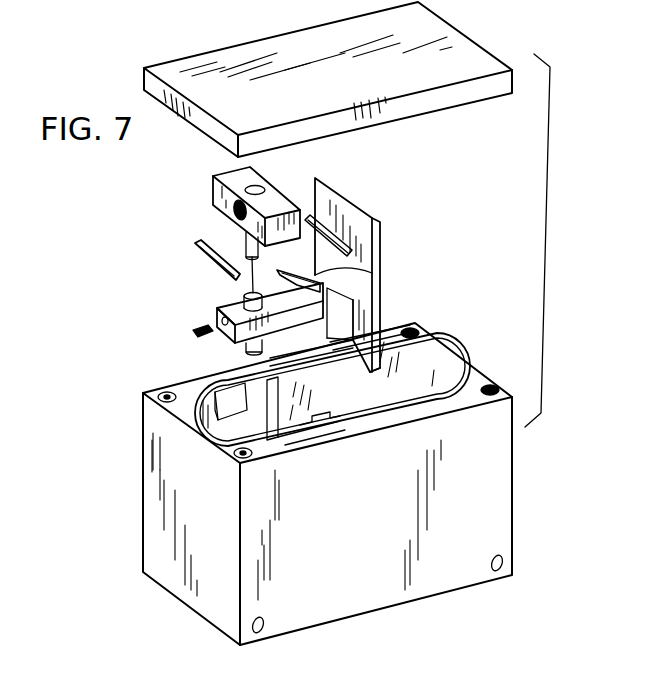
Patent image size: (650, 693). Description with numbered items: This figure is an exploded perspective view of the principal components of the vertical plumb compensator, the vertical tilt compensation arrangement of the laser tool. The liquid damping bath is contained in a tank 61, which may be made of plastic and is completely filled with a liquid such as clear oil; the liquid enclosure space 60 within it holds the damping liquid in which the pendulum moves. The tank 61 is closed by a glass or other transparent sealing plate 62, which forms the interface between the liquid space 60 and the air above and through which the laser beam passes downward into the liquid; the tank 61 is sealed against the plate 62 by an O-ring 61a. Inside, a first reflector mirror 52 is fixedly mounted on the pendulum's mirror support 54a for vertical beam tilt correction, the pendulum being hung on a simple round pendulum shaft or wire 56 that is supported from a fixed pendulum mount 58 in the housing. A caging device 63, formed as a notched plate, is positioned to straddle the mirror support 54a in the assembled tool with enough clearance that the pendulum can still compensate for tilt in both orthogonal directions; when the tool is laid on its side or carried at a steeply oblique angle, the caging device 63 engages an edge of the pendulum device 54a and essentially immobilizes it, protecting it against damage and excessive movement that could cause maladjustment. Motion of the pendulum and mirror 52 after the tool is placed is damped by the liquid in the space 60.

The mirror 52 is at (380, 276).
The mirror support 54a is at (222, 340).
The pendulum shaft or wire 56 is at (246, 258).
The pendulum mount 58 is at (214, 193).
The liquid enclosure space 60 is at (444, 352).
The tank 61 is at (514, 467).
The O-ring 61a is at (192, 418).
The sealing plate 62 is at (477, 63).
The caging device 63 is at (303, 190).